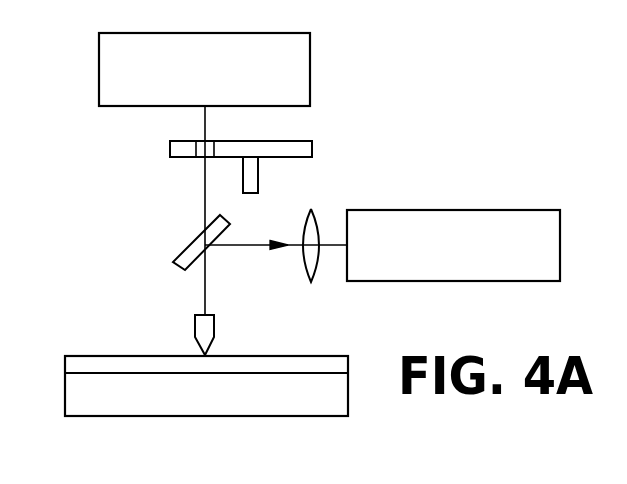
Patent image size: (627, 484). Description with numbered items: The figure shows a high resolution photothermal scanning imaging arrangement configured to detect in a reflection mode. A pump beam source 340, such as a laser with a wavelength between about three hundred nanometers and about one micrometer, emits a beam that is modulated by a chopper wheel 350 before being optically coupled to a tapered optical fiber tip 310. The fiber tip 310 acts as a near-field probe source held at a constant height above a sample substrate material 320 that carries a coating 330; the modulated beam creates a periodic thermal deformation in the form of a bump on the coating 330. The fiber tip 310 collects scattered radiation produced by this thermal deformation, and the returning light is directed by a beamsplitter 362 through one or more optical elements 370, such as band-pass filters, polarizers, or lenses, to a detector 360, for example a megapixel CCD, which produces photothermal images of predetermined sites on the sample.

The tapered optical fiber tip 310 is at (215, 327).
The sample substrate material 320 is at (155, 416).
The coating 330 is at (123, 355).
The pump beam source 340 is at (310, 73).
The chopper wheel 350 is at (297, 141).
The detector 360 is at (463, 210).
The beamsplitter 362 is at (193, 241).
The optical elements 370 is at (318, 210).